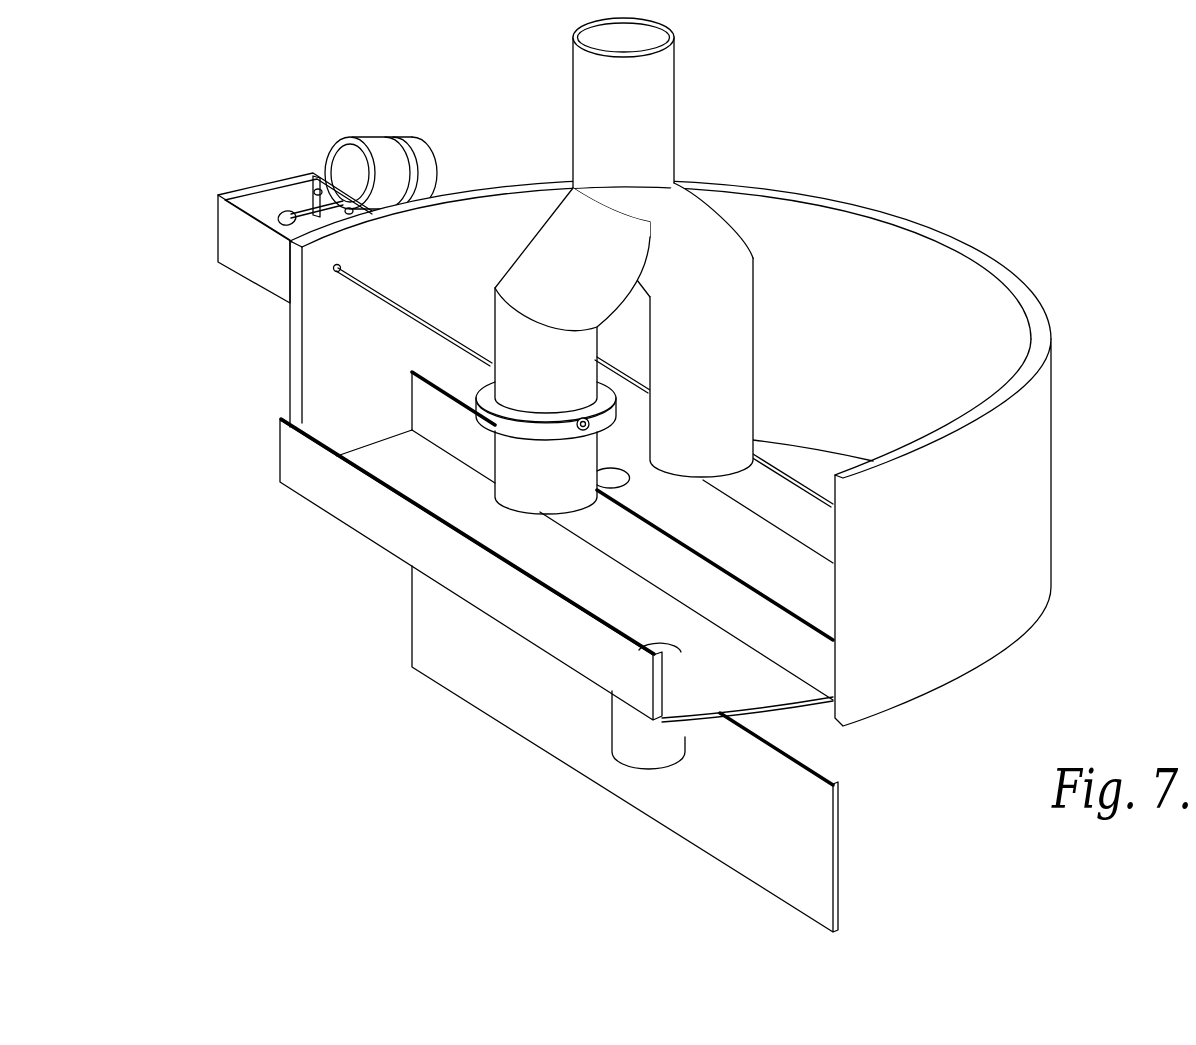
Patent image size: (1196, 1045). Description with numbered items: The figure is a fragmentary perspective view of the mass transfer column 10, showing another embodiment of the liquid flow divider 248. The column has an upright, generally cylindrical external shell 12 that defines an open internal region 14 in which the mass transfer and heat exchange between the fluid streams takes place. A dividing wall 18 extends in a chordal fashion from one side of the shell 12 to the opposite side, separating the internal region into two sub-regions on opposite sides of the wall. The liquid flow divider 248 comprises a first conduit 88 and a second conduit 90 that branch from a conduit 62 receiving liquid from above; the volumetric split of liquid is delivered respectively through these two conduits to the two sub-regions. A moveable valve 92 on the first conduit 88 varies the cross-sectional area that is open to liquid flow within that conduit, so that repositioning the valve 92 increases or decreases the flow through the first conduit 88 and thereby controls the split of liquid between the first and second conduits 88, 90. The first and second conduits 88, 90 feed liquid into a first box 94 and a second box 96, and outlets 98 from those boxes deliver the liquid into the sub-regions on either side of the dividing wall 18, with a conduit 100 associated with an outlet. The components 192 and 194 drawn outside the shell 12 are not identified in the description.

The mass transfer column 10 is at (790, 230).
The external shell 12 is at (982, 256).
The open internal region 14 is at (880, 203).
The dividing wall 18 is at (443, 668).
The conduit 62 is at (668, 80).
The first conduit 88 is at (528, 269).
The second conduit 90 is at (751, 301).
The moveable valve 92 is at (607, 412).
The first box 94 is at (770, 610).
The second box 96 is at (780, 509).
The outlets 98 is at (616, 470).
The conduit 100 is at (627, 753).
The pulley 192 is at (367, 143).
The motor housing 194 is at (252, 186).
The liquid flow divider 248 is at (519, 216).